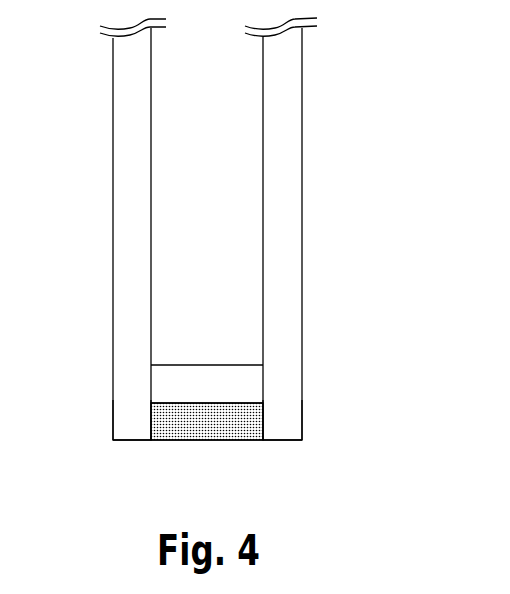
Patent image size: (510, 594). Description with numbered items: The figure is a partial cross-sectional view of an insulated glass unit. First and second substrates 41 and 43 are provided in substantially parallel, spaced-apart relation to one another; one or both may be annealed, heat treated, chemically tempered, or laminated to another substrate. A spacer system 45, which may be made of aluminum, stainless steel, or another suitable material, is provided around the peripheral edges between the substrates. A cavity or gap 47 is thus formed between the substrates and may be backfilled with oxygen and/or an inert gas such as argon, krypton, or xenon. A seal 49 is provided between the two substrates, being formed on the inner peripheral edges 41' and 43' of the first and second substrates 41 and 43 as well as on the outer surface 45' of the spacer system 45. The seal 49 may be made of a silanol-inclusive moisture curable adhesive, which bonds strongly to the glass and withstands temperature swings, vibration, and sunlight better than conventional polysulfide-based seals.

The first substrate 41 is at (325, 234).
The second substrate 43 is at (89, 239).
The spacer system 45 is at (269, 353).
The cavity or gap 47 is at (221, 230).
The seal 49 is at (207, 425).
The outer surface of the spacer system 45' is at (152, 352).
The inner peripheral edge of the second substrate 43' is at (86, 409).
The inner peripheral edge of the first substrate 41' is at (328, 409).